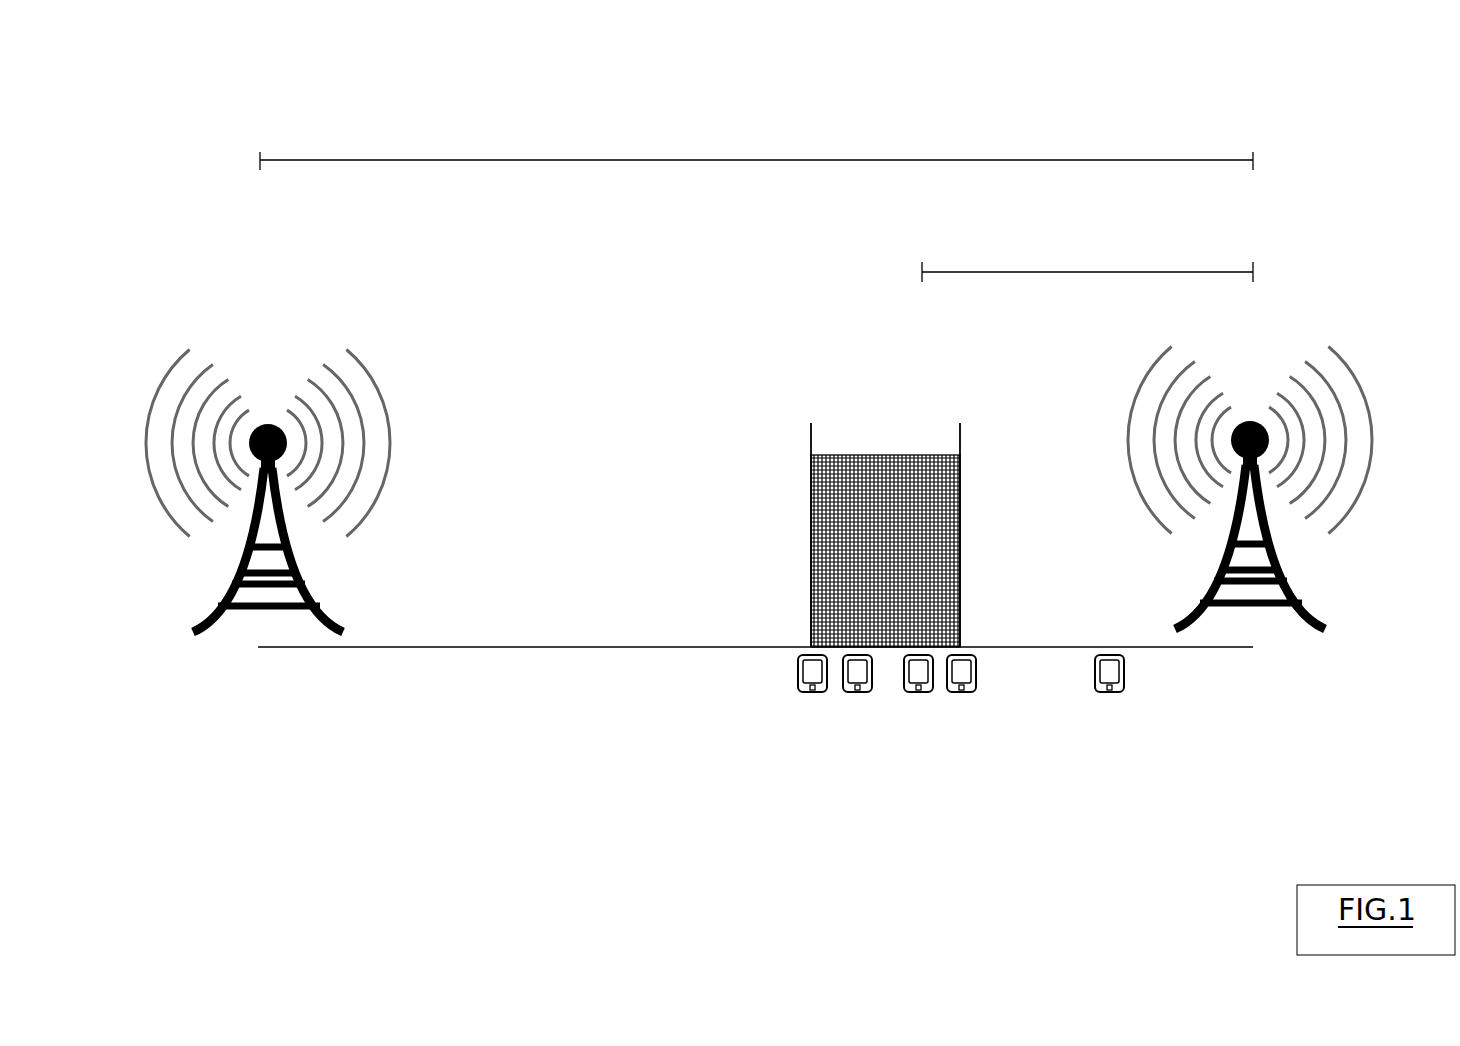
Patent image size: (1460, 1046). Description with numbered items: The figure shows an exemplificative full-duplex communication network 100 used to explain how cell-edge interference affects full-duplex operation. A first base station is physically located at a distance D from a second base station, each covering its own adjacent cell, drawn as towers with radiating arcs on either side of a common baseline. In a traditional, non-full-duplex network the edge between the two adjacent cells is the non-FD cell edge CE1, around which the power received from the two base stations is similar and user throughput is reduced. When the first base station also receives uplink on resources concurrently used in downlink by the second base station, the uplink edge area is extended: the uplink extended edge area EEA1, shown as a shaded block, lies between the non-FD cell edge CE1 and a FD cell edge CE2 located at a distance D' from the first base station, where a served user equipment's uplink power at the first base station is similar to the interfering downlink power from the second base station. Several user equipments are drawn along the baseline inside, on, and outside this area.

The FD communication network 100 is at (205, 121).
The distance D is at (756, 150).
The distance D' is at (1087, 258).
The uplink extended edge area EEA1 is at (863, 425).
The non-FD cell edge CE1 is at (810, 436).
The FD cell edge CE2 is at (962, 436).